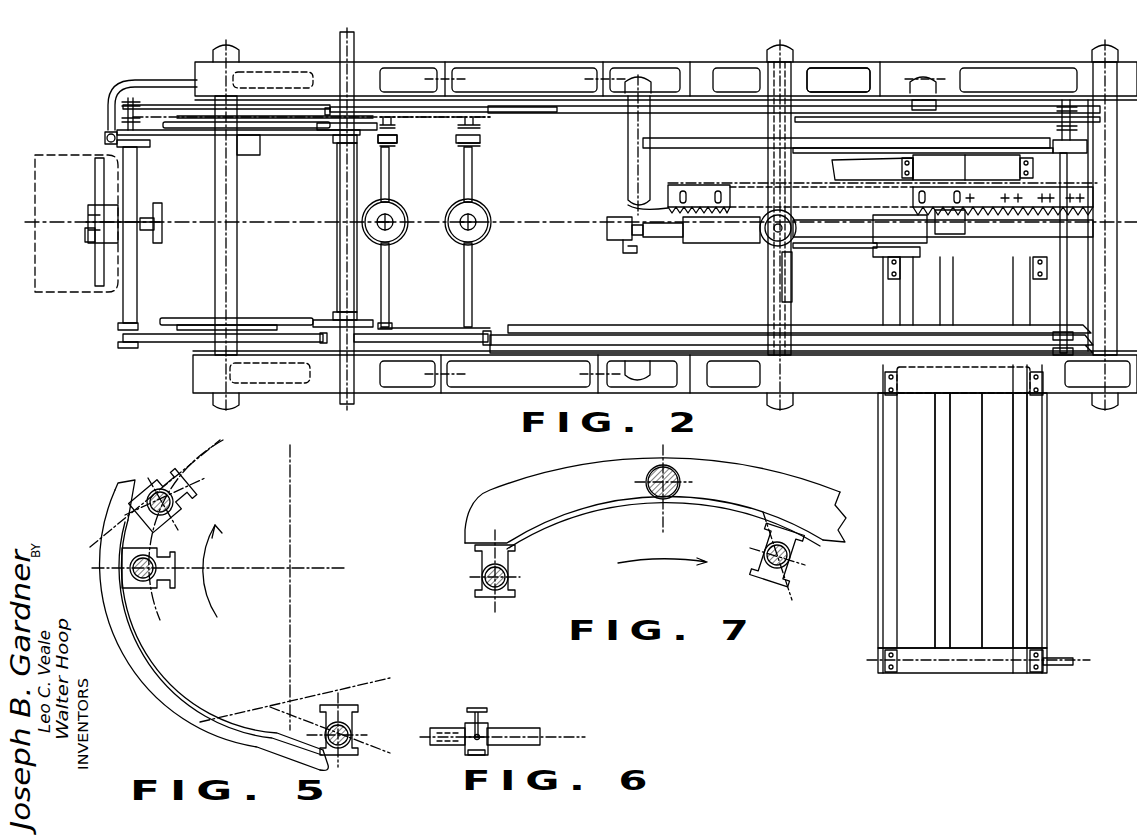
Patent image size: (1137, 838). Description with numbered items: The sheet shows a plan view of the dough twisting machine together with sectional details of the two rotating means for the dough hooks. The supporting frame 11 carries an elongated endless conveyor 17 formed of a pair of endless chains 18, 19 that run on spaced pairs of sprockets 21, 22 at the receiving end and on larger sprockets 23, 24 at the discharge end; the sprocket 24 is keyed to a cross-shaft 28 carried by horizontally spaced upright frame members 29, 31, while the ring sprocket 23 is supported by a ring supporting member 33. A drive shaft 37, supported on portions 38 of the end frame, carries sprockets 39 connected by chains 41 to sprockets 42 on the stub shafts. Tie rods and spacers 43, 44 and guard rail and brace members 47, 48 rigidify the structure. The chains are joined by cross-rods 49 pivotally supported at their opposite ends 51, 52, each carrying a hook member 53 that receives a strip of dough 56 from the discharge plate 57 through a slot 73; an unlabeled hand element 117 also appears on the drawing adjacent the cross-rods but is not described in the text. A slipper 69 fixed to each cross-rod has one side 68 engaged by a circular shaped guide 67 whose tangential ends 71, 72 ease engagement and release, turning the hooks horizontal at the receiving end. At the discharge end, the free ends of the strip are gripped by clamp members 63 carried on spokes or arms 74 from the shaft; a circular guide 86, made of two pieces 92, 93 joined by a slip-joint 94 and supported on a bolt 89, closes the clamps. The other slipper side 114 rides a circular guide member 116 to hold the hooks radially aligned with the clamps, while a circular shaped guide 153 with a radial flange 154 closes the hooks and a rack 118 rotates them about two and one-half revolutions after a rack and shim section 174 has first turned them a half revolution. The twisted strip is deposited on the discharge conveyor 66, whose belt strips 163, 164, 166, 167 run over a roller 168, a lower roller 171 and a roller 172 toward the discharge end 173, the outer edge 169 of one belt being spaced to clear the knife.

In FIG. 2, the supporting frame 11 is at (556, 64).
In FIG. 2, the endless conveyor 17 is at (480, 325).
In FIG. 2, the endless chain 18 is at (447, 122).
In FIG. 2, the endless chain 19 is at (428, 333).
In FIG. 2, the sprocket 21 is at (165, 105).
In FIG. 2, the sprocket 22 is at (182, 342).
In FIG. 2, the sprocket 23 is at (575, 342).
In FIG. 2, the sprocket 24 is at (600, 114).
In FIG. 2, the cross-shaft 28 is at (800, 66).
In FIG. 2, the upright frame member 29 is at (805, 393).
In FIG. 2, the upright frame member 31 is at (862, 68).
In FIG. 2, the ring supporting member 33 is at (540, 327).
In FIG. 2, the drive shaft 37 is at (340, 190).
In FIG. 2, the end frame portion 38 is at (358, 66).
In FIG. 2, the sprocket 39 is at (335, 131).
In FIG. 2, the chain 41 is at (300, 129).
In FIG. 2, the sprocket 42 is at (262, 155).
In FIG. 2, the tie rod and spacer 43 is at (238, 268).
In FIG. 2, the tie rod and spacer 44 is at (1092, 287).
In FIG. 7, the tie rod and spacer 44 is at (682, 480).
In FIG. 2, the guard rail and brace member 47 is at (283, 72).
In FIG. 2, the guard rail and brace member 48 is at (285, 383).
In FIG. 2, the cross-rod 49 is at (390, 275).
In FIG. 5, the cross-rod 49 is at (150, 578).
In FIG. 7, the cross-rod 49 is at (490, 572).
In FIG. 6, the cross-rod 49 is at (540, 734).
In FIG. 2, the cross-rod end 51 is at (389, 322).
In FIG. 2, the cross-rod end 52 is at (396, 140).
In FIG. 2, the hook member 53 is at (88, 212).
In FIG. 2, the strip of dough 56 is at (95, 180).
In FIG. 2, the discharge plate 57 is at (88, 292).
In FIG. 2, the clamp member 63 is at (612, 240).
In FIG. 2, the discharge conveyor 66 is at (1022, 496).
In FIG. 2, the circular shaped guide 67 is at (105, 140).
In FIG. 5, the circular shaped guide 67 is at (192, 718).
In FIG. 5, the slipper side 68 is at (142, 492).
In FIG. 7, the slipper side 68 is at (497, 597).
In FIG. 6, the slipper side 68 is at (483, 755).
In FIG. 2, the slipper 69 is at (140, 146).
In FIG. 5, the slipper 69 is at (172, 556).
In FIG. 7, the slipper 69 is at (508, 566).
In FIG. 6, the slipper 69 is at (490, 725).
In FIG. 5, the guide end 71 is at (123, 488).
In FIG. 5, the guide end 72 is at (315, 765).
In FIG. 2, the slot 73 is at (88, 243).
In FIG. 2, the spoke or arm 74 is at (640, 244).
In FIG. 2, the circular guide 86 is at (840, 248).
In FIG. 2, the bolt 89 is at (780, 280).
In FIG. 2, the guide piece 92 is at (815, 250).
In FIG. 2, the guide piece 93 is at (890, 279).
In FIG. 2, the slip-joint 94 is at (878, 257).
In FIG. 5, the slipper side 114 is at (200, 495).
In FIG. 7, the slipper side 114 is at (510, 537).
In FIG. 6, the slipper side 114 is at (480, 708).
In FIG. 2, the circular guide member 116 is at (738, 147).
In FIG. 7, the circular guide member 116 is at (618, 504).
In FIG. 2, the hand wheel 117 is at (162, 216).
In FIG. 2, the rack 118 is at (913, 193).
In FIG. 2, the circular shaped guide 153 is at (722, 243).
In FIG. 2, the radial flange 154 is at (686, 190).
In FIG. 2, the belt strip 163 is at (940, 467).
In FIG. 2, the belt strip 164 is at (953, 489).
In FIG. 2, the belt strip 166 is at (985, 517).
In FIG. 2, the belt strip 167 is at (1020, 563).
In FIG. 2, the roller 168 is at (945, 160).
In FIG. 2, the belt outer edge 169 is at (1013, 535).
In FIG. 2, the roller 171 is at (1005, 278).
In FIG. 2, the roller 172 is at (926, 390).
In FIG. 2, the discharge end 173 is at (960, 673).
In FIG. 2, the rack and shim section 174 is at (648, 210).